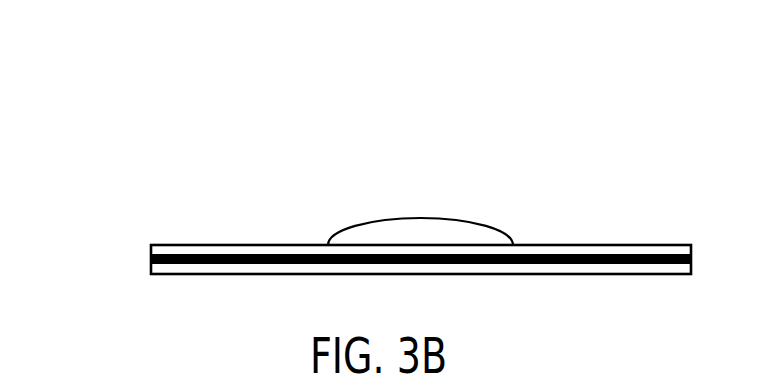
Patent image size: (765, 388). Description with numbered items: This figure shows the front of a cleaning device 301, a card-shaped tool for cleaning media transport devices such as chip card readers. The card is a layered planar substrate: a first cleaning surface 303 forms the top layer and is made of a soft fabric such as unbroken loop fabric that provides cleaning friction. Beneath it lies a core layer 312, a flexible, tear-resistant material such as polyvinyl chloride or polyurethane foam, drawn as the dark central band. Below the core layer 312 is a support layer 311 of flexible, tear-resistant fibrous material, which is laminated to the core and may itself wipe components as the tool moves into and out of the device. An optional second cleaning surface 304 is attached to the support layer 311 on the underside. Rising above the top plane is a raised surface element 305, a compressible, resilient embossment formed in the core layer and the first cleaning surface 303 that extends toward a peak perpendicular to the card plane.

The cleaning device 301 is at (176, 90).
The first cleaning surface 303 is at (302, 255).
The second cleaning surface 304 is at (547, 276).
The raised surface element 305 is at (423, 228).
The support layer 311 is at (195, 267).
The core layer 312 is at (222, 256).